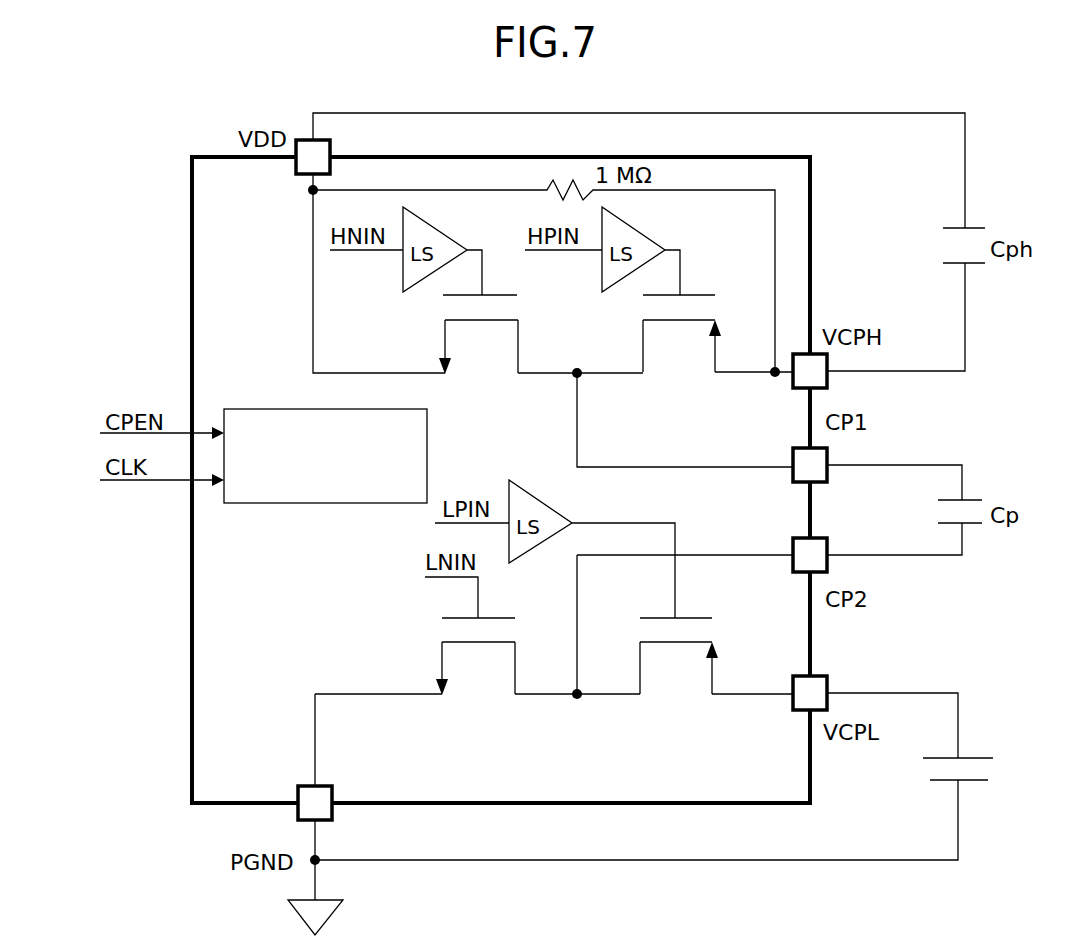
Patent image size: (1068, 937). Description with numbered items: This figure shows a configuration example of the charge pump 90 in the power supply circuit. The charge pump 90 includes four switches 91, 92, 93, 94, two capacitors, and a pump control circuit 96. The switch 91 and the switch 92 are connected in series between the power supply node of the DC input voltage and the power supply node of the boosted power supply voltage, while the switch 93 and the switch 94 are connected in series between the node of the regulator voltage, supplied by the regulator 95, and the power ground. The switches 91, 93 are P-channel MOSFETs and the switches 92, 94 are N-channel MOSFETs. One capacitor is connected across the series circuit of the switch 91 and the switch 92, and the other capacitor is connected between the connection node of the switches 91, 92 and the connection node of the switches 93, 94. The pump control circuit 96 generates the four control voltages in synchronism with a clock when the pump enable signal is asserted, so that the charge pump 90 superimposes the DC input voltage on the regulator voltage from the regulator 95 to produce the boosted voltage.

The charge pump 90 is at (84, 143).
The switch 91 is at (641, 362).
The switch 92 is at (443, 362).
The switch 93 is at (638, 682).
The switch 94 is at (440, 682).
The regulator 95 is at (980, 756).
The pump control circuit 96 is at (427, 440).